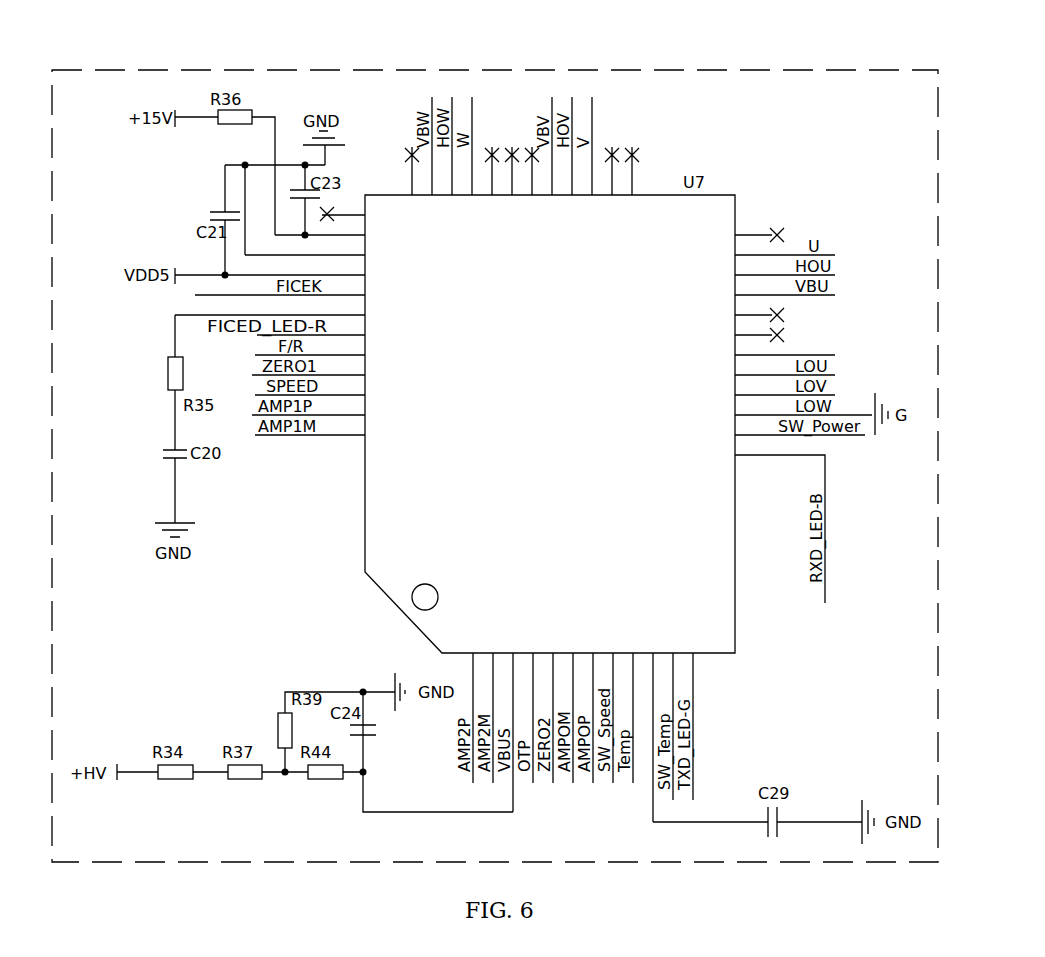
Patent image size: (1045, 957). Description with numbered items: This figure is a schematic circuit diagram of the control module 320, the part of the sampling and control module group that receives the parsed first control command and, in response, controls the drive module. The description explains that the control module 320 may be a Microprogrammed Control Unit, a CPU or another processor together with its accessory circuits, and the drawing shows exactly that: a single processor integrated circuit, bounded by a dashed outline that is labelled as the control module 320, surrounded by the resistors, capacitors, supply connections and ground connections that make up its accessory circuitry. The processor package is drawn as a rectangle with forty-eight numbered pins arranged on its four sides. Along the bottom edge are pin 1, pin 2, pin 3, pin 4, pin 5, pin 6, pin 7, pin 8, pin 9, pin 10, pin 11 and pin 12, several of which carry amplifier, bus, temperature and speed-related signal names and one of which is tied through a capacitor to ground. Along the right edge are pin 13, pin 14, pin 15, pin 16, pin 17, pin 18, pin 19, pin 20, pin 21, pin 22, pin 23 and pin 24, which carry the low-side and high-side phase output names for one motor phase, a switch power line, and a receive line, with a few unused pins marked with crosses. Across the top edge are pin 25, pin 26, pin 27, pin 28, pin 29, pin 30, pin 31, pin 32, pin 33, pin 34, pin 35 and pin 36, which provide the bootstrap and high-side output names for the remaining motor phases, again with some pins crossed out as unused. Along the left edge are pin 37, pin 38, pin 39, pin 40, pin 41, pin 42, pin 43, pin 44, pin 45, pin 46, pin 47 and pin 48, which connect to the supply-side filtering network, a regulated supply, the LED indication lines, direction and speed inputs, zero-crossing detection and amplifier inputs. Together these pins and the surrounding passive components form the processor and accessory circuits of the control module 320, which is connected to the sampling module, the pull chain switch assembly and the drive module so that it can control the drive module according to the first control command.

The control module 320 is at (632, 100).
The pin 1 (AMP2P) 1 is at (464, 718).
The pin 2 (AMP2M) 2 is at (484, 718).
The pin 3 (VBUS) 3 is at (504, 732).
The pin 4 (OTP) 4 is at (524, 718).
The pin 5 (ZERO2) 5 is at (544, 718).
The pin 6 (AMPOM) 6 is at (564, 718).
The pin 7 (AMPOP) 7 is at (584, 718).
The pin 8 (SW_Speed) 8 is at (604, 718).
The pin 9 (Temp) 9 is at (624, 718).
The pin 10 is at (644, 737).
The pin 11 (SW_Temp) 11 is at (664, 726).
The pin 12 (TXD_LED-G) 12 is at (684, 726).
The pin 13 (RXD_LED-B) 13 is at (780, 520).
The pin 14 (SW_Power) 14 is at (800, 426).
The pin 15 (LOW) 15 is at (803, 406).
The pin 16 (LOV) 16 is at (785, 386).
The pin 17 (LOU) 17 is at (785, 366).
The pin 18 is at (785, 346).
The pin 19 is at (759, 329).
The pin 20 is at (759, 309).
The pin 21 (VBU) 21 is at (785, 286).
The pin 22 (HOU) 22 is at (785, 266).
The pin 23 (U) 23 is at (785, 246).
The pin 24 is at (759, 229).
The pin 25 is at (626, 171).
The pin 26 is at (606, 171).
The pin 27 (V) 27 is at (583, 146).
The pin 28 (HOV) 28 is at (563, 146).
The pin 29 (VBV) 29 is at (543, 146).
The pin 30 is at (526, 171).
The pin 31 is at (506, 171).
The pin 32 is at (486, 171).
The pin 33 (W) 33 is at (463, 146).
The pin 34 (HOW) 34 is at (443, 146).
The pin 35 (VBW) 35 is at (423, 146).
The pin 36 is at (406, 171).
The pin 37 is at (342, 209).
The pin 38 is at (335, 226).
The pin 39 is at (305, 246).
The pin 40 is at (270, 266).
The pin 41 (FICEK) 41 is at (280, 286).
The pin 42 is at (270, 306).
The pin 43 (FICED_LED-R) 43 is at (311, 326).
The pin 44 (F/R) 44 is at (310, 346).
The pin 45 (ZERO1) 45 is at (308, 366).
The pin 46 (SPEED) 46 is at (310, 386).
The pin 47 (AMP1P) 47 is at (308, 406).
The pin 48 (AMP1M) 48 is at (310, 426).